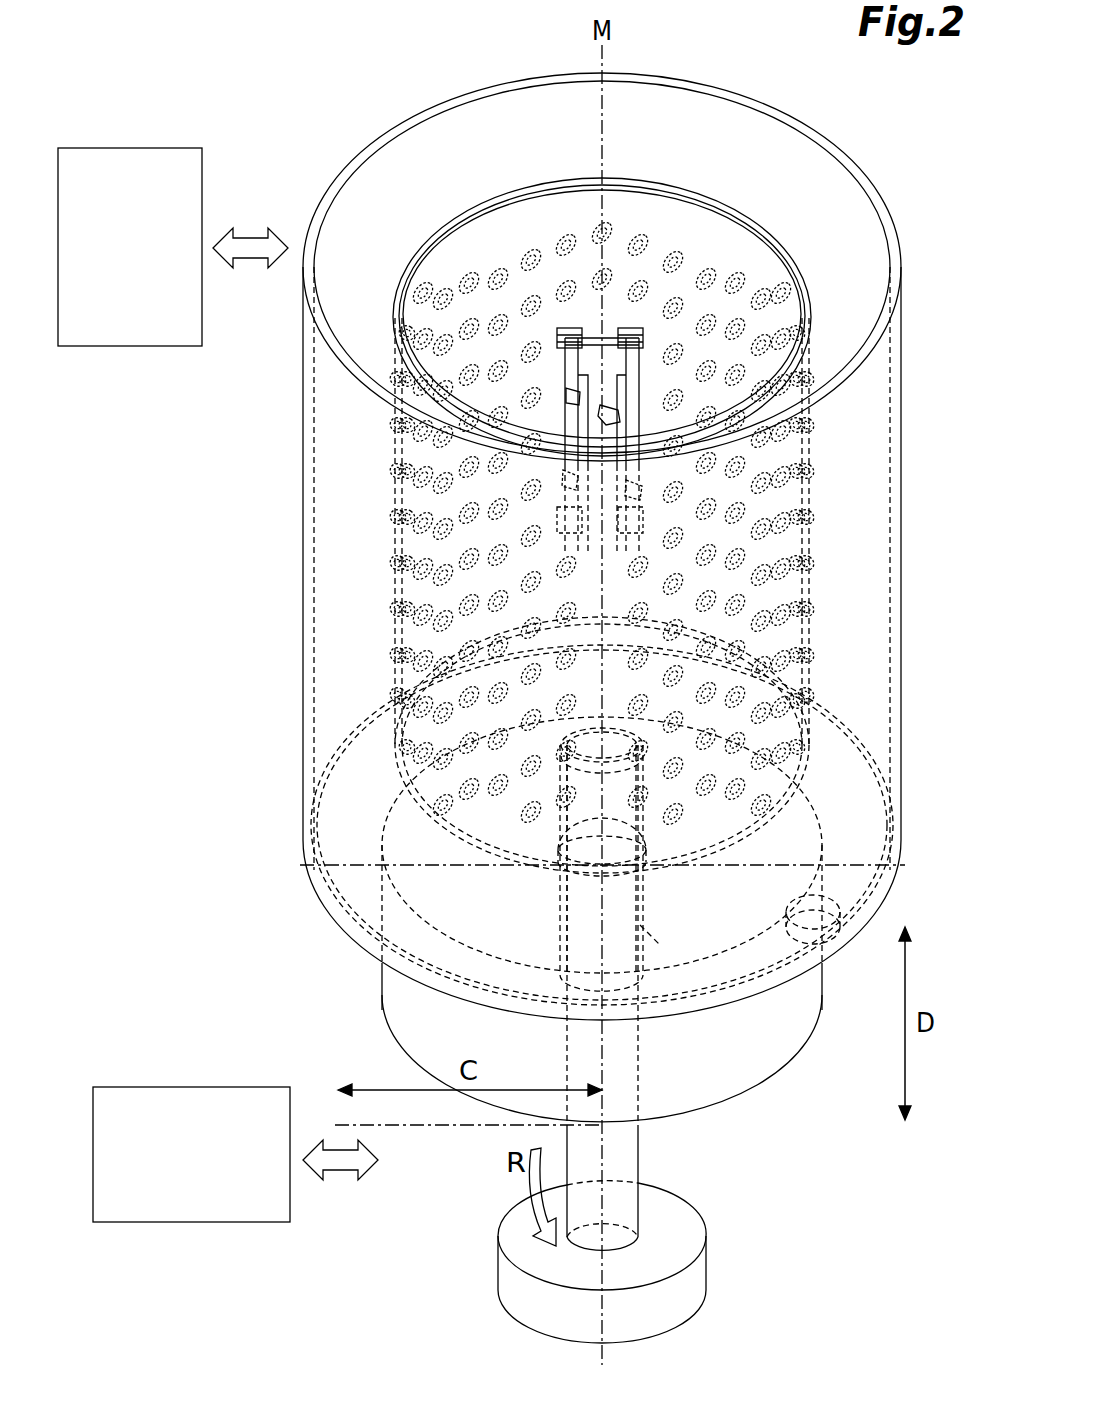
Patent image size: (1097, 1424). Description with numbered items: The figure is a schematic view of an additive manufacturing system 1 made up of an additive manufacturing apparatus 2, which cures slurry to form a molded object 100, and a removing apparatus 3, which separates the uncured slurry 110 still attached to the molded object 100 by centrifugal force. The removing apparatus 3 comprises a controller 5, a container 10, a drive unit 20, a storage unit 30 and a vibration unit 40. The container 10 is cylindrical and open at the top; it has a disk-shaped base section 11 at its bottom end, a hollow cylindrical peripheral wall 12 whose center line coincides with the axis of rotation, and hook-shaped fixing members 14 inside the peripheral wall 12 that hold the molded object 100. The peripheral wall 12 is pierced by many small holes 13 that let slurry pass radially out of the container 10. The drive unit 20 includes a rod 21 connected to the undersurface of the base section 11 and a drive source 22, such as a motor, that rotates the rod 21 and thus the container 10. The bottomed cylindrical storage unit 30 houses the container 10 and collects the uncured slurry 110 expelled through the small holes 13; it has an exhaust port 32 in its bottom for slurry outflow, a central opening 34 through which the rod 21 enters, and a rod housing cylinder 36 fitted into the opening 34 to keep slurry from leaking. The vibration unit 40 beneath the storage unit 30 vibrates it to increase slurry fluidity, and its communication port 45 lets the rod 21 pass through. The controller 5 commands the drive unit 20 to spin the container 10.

The additive manufacturing system 1 is at (200, 70).
The additive manufacturing apparatus 2 is at (130, 348).
The removing apparatus 3 is at (295, 163).
The controller 5 is at (193, 1086).
The container 10 is at (543, 520).
The base section 11 is at (485, 821).
The peripheral wall 12 is at (815, 361).
The small holes 13 is at (675, 230).
The fixing members 14 is at (628, 328).
The drive unit 20 is at (653, 1260).
The rod 21 is at (629, 1153).
The drive source 22 is at (686, 1233).
The storage unit 30 is at (892, 233).
The exhaust port 32 is at (870, 894).
The opening 34 is at (650, 843).
The rod housing cylinder 36 is at (645, 738).
The vibration unit 40 is at (752, 1050).
The communication port 45 is at (650, 937).
The molded object 100 is at (595, 372).
The uncured slurry 110 is at (572, 397).